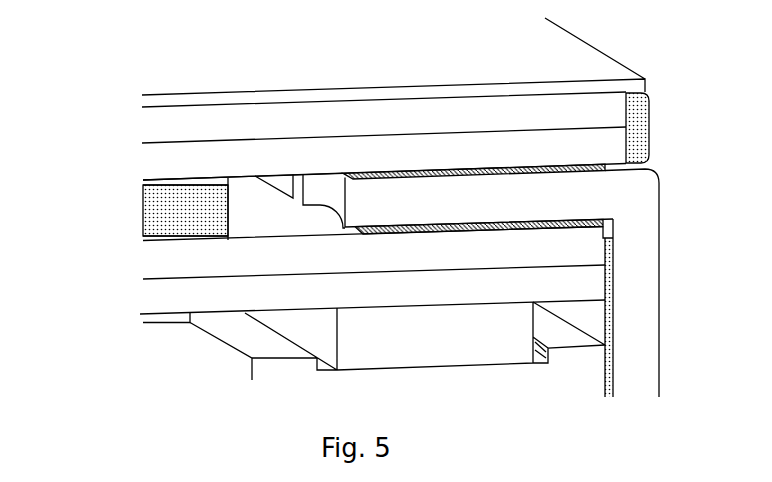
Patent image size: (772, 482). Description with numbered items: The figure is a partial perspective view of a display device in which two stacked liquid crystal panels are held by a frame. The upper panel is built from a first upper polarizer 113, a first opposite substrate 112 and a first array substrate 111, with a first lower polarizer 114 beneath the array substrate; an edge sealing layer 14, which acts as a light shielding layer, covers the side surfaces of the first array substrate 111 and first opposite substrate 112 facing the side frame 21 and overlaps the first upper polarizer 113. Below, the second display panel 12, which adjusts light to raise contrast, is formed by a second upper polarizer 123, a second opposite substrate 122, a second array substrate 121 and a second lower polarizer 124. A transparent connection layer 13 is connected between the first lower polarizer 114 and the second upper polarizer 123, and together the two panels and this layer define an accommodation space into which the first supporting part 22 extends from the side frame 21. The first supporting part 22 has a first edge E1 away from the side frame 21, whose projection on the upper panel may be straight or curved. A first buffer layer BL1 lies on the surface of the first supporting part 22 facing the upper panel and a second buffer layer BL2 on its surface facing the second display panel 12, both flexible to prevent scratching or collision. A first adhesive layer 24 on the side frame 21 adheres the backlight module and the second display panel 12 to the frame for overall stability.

The first upper polarizer 113 is at (617, 70).
The first opposite substrate 112 is at (593, 108).
The first array substrate 111 is at (598, 142).
The edge sealing layer 14 is at (648, 100).
The first buffer layer BL1 is at (607, 166).
The first supporting part 22 is at (580, 201).
The side frame 21 is at (628, 340).
The second buffer layer BL2 is at (613, 225).
The first adhesive layer 24 is at (610, 288).
The first lower polarizer 114 is at (158, 180).
The connection layer 13 is at (162, 205).
The first edge E1 is at (323, 193).
The second upper polarizer 123 is at (158, 240).
The second opposite substrate 122 is at (182, 260).
The second array substrate 121 is at (173, 301).
The second lower polarizer 124 is at (160, 320).
The second display panel 12 is at (68, 255).